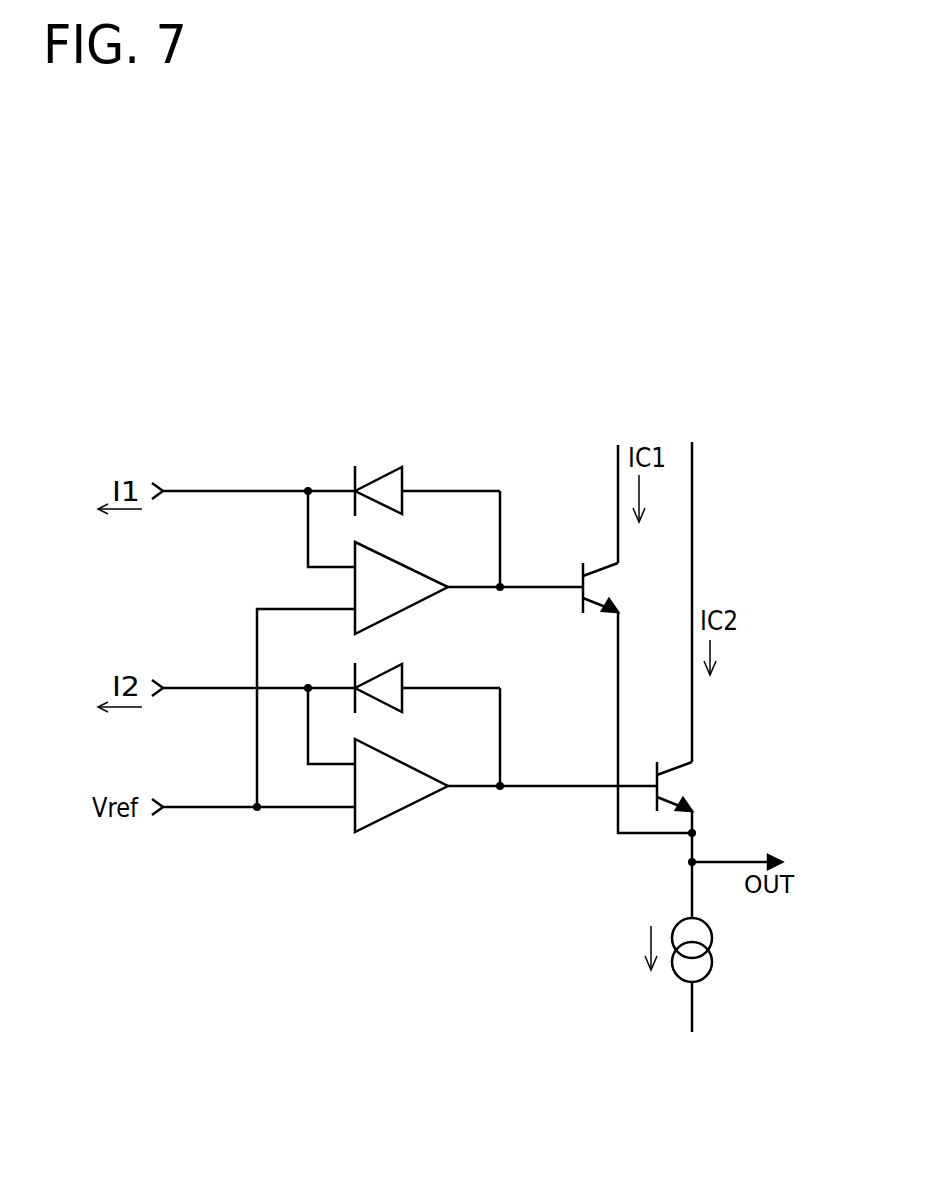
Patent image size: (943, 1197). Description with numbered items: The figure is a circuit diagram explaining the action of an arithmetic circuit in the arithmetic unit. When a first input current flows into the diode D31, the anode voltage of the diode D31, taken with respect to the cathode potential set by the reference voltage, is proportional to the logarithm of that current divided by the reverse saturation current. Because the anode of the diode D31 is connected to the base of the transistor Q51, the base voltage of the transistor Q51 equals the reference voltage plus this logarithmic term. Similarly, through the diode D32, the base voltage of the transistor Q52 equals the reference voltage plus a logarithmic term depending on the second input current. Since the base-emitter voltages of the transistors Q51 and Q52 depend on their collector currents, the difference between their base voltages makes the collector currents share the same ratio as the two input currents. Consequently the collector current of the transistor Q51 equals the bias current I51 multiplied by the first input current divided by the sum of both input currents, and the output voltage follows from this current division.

The diode D31 is at (408, 473).
The diode D32 is at (408, 669).
The transistor Q51 is at (605, 586).
The transistor Q52 is at (685, 784).
The bias current I51 is at (715, 954).